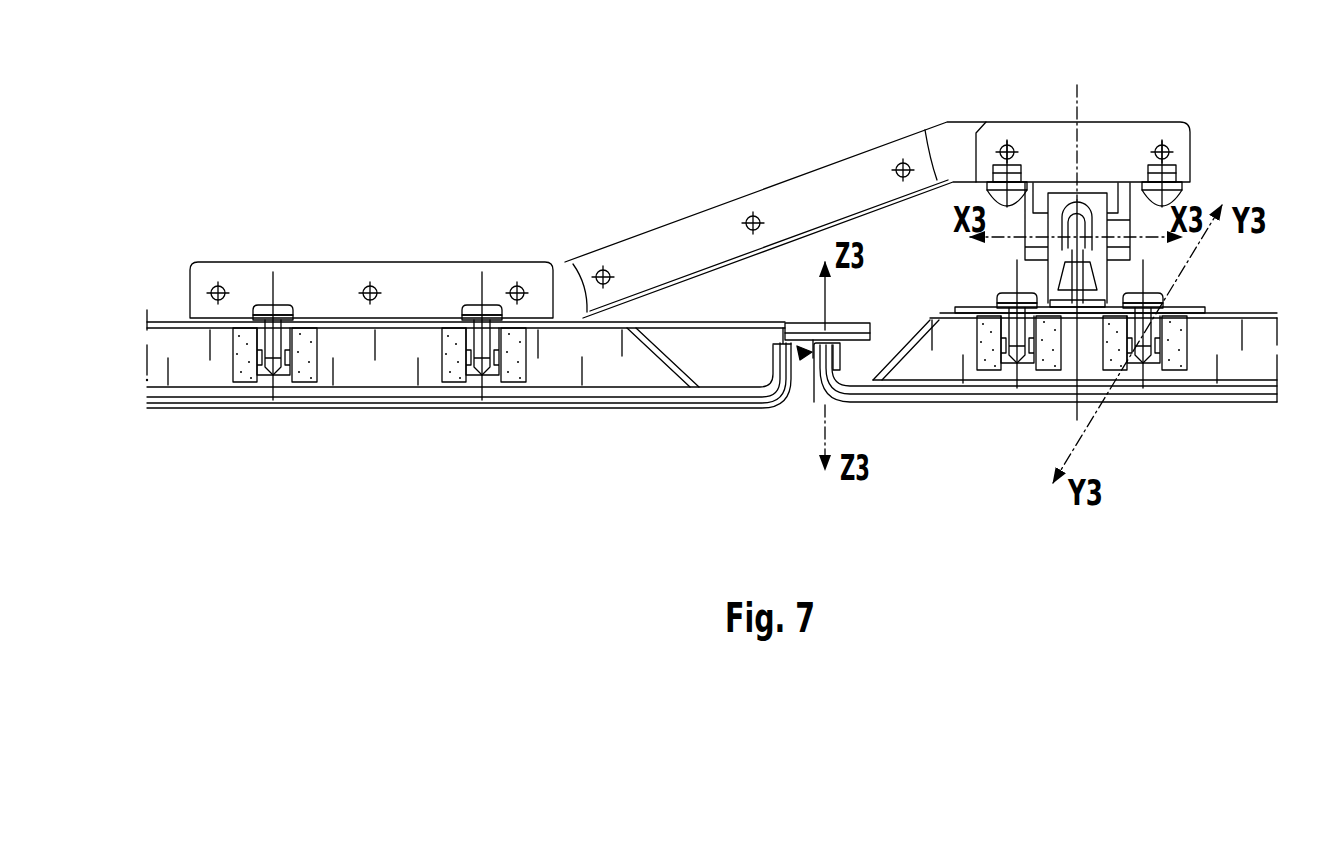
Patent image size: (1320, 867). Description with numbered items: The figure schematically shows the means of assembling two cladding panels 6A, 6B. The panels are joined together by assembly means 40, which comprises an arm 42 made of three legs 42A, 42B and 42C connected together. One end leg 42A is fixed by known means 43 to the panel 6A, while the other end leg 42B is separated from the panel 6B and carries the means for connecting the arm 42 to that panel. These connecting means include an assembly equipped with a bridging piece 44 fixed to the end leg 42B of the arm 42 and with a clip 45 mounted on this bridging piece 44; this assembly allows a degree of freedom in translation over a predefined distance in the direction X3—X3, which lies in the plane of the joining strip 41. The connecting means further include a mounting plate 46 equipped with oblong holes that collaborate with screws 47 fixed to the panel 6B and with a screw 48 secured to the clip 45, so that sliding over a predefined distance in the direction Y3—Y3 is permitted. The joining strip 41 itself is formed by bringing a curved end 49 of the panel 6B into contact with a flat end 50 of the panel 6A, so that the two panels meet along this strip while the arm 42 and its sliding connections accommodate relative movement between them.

The cladding panel 6A is at (388, 420).
The cladding panel 6B is at (1190, 413).
The assembly means 40 is at (688, 214).
The joining strip 41 is at (800, 393).
The arm 42 is at (688, 175).
The end leg 42A is at (198, 300).
The end leg 42B is at (1137, 130).
The leg 42C is at (677, 240).
The known fixing means 43 is at (273, 397).
The bridging piece 44 is at (1037, 183).
The clip 45 is at (1057, 252).
The mounting plate 46 is at (1205, 311).
The screws 47 is at (1015, 340).
The screw 48 is at (1055, 272).
The curved end 49 is at (785, 330).
The flat end 50 is at (853, 330).